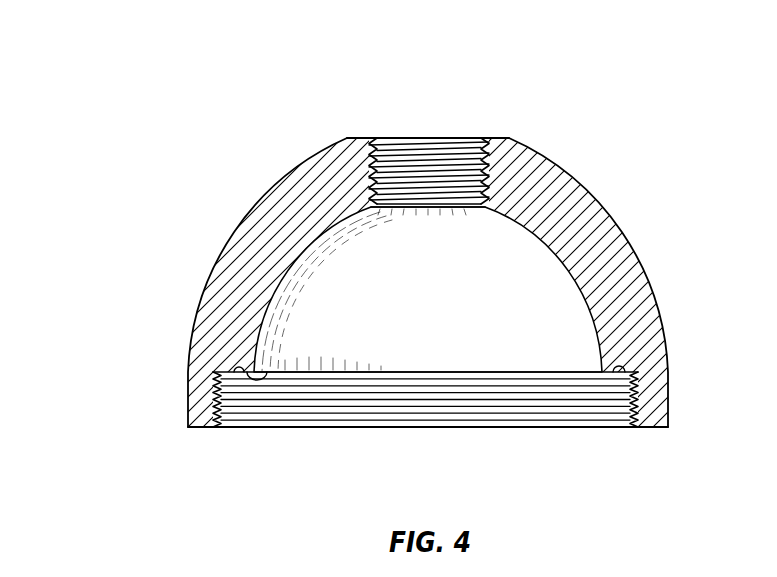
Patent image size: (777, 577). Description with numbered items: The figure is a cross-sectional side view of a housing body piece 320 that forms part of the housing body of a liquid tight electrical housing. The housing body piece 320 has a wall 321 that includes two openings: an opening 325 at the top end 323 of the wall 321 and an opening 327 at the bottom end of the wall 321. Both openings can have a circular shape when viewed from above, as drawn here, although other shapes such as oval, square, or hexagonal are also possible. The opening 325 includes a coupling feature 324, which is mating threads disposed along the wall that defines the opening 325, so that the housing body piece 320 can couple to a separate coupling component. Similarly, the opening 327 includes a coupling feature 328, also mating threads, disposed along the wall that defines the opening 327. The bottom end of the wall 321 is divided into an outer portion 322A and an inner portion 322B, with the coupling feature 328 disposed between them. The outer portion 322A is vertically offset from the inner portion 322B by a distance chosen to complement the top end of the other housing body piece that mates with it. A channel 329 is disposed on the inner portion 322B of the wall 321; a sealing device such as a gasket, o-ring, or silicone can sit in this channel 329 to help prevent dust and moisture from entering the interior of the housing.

The housing body piece 320 is at (166, 62).
The wall 321 is at (607, 214).
The outer portion 322A is at (207, 428).
The inner portion 322B is at (258, 378).
The top end 323 is at (503, 138).
The coupling feature 324 is at (374, 146).
The opening 325 is at (465, 130).
The opening 327 is at (466, 356).
The coupling feature 328 is at (230, 410).
The channel 329 is at (238, 365).